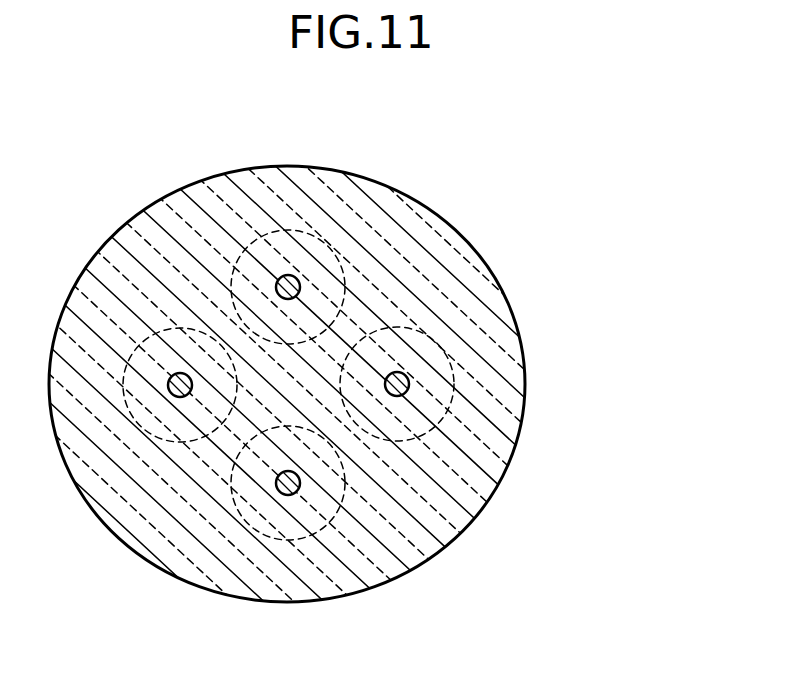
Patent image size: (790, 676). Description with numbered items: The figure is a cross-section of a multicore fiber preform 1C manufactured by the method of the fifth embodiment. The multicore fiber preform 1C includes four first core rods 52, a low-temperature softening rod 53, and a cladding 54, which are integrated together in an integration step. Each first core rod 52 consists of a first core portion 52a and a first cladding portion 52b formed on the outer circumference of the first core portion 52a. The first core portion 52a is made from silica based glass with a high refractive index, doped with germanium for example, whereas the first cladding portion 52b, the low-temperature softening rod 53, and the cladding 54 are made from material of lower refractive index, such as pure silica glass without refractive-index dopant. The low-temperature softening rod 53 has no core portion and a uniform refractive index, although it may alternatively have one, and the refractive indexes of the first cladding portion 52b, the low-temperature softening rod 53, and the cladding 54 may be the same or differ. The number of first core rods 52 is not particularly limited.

The multicore fiber preform 1C is at (546, 118).
The first core rod 52 is at (632, 318).
The first core portion 52a is at (405, 372).
The first cladding portion 52b is at (454, 372).
The low-temperature softening rod 53 is at (330, 325).
The cladding 54 is at (421, 204).